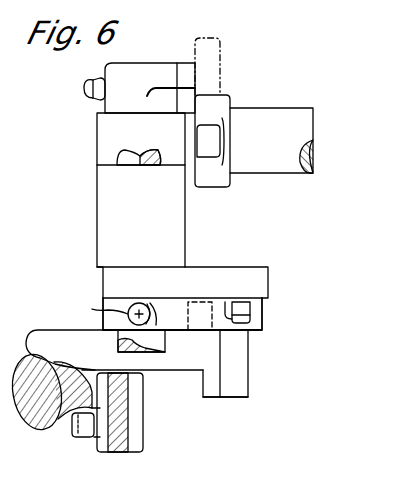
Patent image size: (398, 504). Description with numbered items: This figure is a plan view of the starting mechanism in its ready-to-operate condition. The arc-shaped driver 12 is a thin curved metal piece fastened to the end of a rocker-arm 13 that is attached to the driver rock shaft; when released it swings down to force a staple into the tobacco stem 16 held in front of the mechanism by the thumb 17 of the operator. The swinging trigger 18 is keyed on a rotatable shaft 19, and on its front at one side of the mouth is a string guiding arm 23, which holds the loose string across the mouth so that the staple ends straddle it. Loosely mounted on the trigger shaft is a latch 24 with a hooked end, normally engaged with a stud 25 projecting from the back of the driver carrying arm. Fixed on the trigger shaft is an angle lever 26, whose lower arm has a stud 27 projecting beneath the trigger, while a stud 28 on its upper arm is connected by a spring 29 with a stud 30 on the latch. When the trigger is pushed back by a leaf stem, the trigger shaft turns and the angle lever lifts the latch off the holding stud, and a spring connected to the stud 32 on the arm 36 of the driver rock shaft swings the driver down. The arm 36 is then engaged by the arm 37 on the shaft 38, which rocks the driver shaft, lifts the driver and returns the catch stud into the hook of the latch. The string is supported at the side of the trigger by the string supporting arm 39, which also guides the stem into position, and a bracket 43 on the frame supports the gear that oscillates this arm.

The arc-shaped driver 12 is at (233, 398).
The rocker-arm 13 is at (249, 360).
The tobacco stem 16 is at (68, 422).
The thumb 17 is at (38, 437).
The swinging trigger 18 is at (143, 438).
The rotatable shaft 19 is at (165, 350).
The string guiding arm 23 is at (87, 438).
The latch 24 is at (256, 318).
The stud 25 is at (185, 314).
The angle lever 26 is at (268, 278).
The stud 27 is at (98, 313).
The stud 28 is at (262, 325).
The spring 29 is at (232, 306).
The stud 30 is at (134, 304).
The stud 32 is at (84, 87).
The arm 36 is at (105, 105).
The arm 37 is at (230, 100).
The shaft 38 is at (313, 114).
The string supporting arm 39 is at (41, 330).
The bracket 43 is at (186, 221).